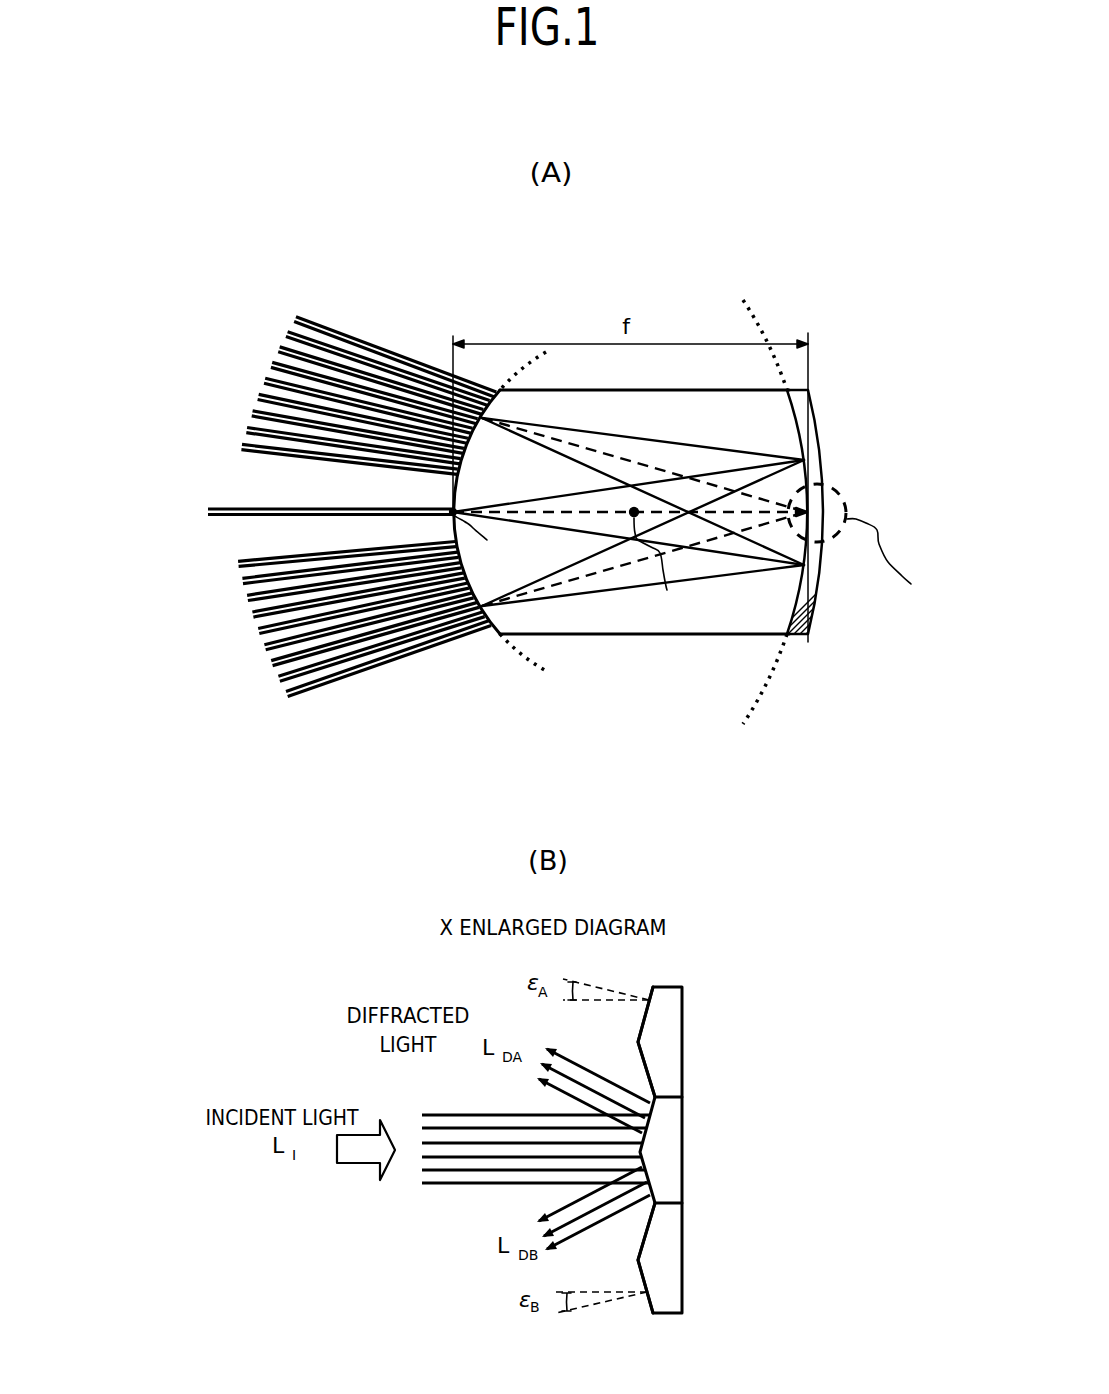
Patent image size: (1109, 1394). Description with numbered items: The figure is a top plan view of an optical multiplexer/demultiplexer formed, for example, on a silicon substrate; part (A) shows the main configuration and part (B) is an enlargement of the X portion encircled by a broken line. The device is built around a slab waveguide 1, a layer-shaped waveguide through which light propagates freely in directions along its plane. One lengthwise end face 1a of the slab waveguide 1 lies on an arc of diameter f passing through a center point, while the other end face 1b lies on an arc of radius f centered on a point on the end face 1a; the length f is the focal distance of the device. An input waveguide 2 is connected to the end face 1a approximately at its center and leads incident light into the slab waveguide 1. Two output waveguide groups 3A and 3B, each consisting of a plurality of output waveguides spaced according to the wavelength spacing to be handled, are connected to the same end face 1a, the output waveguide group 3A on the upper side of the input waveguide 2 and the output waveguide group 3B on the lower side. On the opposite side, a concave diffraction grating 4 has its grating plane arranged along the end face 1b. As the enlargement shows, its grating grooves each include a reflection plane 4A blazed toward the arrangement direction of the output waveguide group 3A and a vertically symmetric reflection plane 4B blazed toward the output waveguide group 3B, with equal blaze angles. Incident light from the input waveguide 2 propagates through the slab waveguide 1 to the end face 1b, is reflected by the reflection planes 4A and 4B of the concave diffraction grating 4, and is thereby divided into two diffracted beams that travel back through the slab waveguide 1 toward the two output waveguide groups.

The slab waveguide 1 is at (645, 635).
The end face 1a is at (503, 390).
The end face 1b is at (790, 633).
The input waveguide 2 is at (217, 507).
The output waveguide group 3A is at (373, 477).
The output waveguide group 3B is at (372, 552).
The concave diffraction grating 4 is at (746, 1204).
The reflection plane 4A is at (652, 1098).
The reflection plane 4B is at (653, 1203).